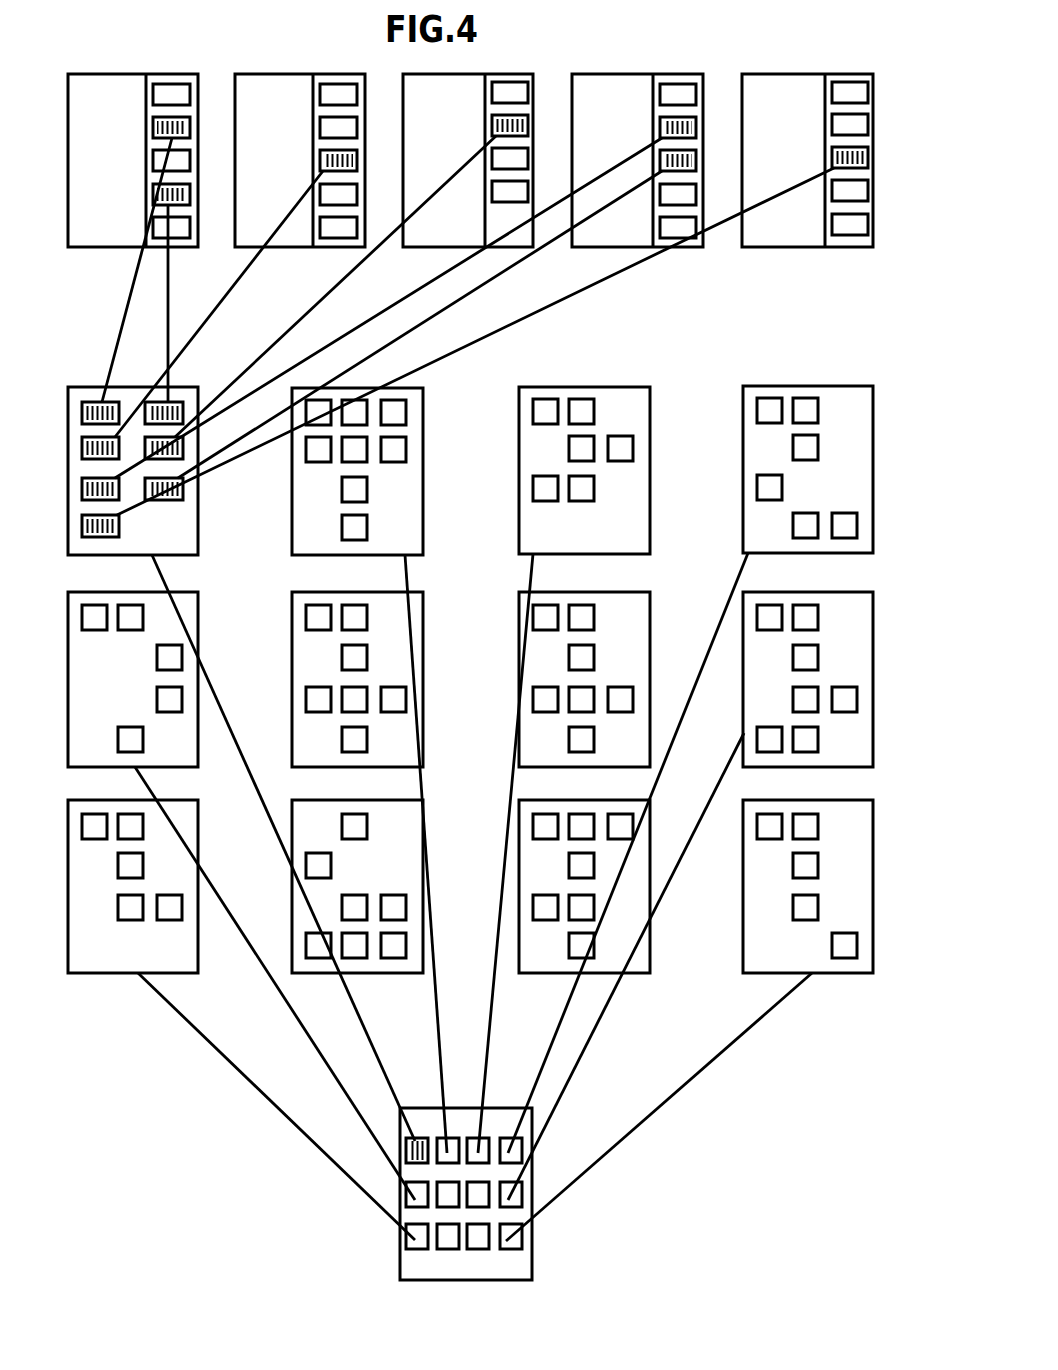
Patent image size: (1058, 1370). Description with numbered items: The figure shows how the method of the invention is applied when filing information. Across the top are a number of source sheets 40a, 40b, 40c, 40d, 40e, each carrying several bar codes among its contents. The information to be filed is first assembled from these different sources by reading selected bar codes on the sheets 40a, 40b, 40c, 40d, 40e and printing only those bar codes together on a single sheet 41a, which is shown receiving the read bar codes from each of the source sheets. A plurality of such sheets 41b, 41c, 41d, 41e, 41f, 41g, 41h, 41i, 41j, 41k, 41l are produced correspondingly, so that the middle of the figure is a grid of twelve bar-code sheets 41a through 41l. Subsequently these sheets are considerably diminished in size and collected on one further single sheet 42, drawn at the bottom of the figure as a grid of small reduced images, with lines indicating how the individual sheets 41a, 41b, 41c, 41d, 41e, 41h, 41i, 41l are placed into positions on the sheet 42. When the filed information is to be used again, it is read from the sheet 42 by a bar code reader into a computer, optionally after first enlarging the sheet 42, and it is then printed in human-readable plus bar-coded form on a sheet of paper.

The sheet 40a is at (128, 175).
The sheet 40b is at (296, 175).
The sheet 40c is at (466, 142).
The sheet 40d is at (636, 142).
The sheet 40e is at (806, 141).
The single sheet 41a is at (178, 529).
The sheet 41b is at (405, 528).
The sheet 41c is at (628, 527).
The sheet 41d is at (862, 527).
The sheet 41e is at (185, 612).
The sheet 41f is at (413, 613).
The sheet 41g is at (632, 612).
The sheet 41h is at (857, 612).
The sheet 41i is at (185, 825).
The sheet 41j is at (410, 825).
The sheet 41k is at (637, 948).
The sheet 41l is at (860, 823).
The single sheet 42 is at (466, 1214).